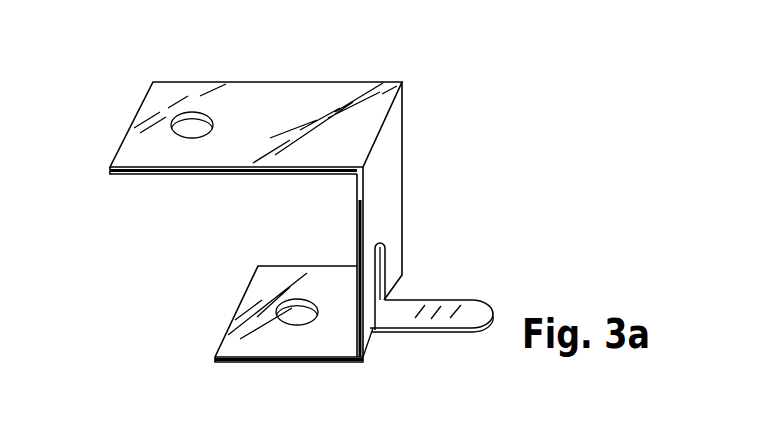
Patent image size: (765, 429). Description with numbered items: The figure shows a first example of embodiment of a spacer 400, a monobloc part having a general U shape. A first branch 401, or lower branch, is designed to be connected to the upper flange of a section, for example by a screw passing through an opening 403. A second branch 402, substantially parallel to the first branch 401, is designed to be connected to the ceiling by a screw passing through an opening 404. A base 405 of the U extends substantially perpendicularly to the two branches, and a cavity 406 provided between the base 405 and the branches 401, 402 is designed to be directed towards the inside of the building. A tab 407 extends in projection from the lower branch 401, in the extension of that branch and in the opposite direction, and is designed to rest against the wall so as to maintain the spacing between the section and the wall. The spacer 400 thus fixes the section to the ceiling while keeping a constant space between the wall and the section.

The spacer 400 is at (103, 297).
The first branch 401 is at (250, 318).
The second branch 402 is at (292, 95).
The opening 403 is at (293, 312).
The opening 404 is at (188, 132).
The base 405 is at (387, 182).
The cavity 406 is at (275, 224).
The tab 407 is at (410, 303).